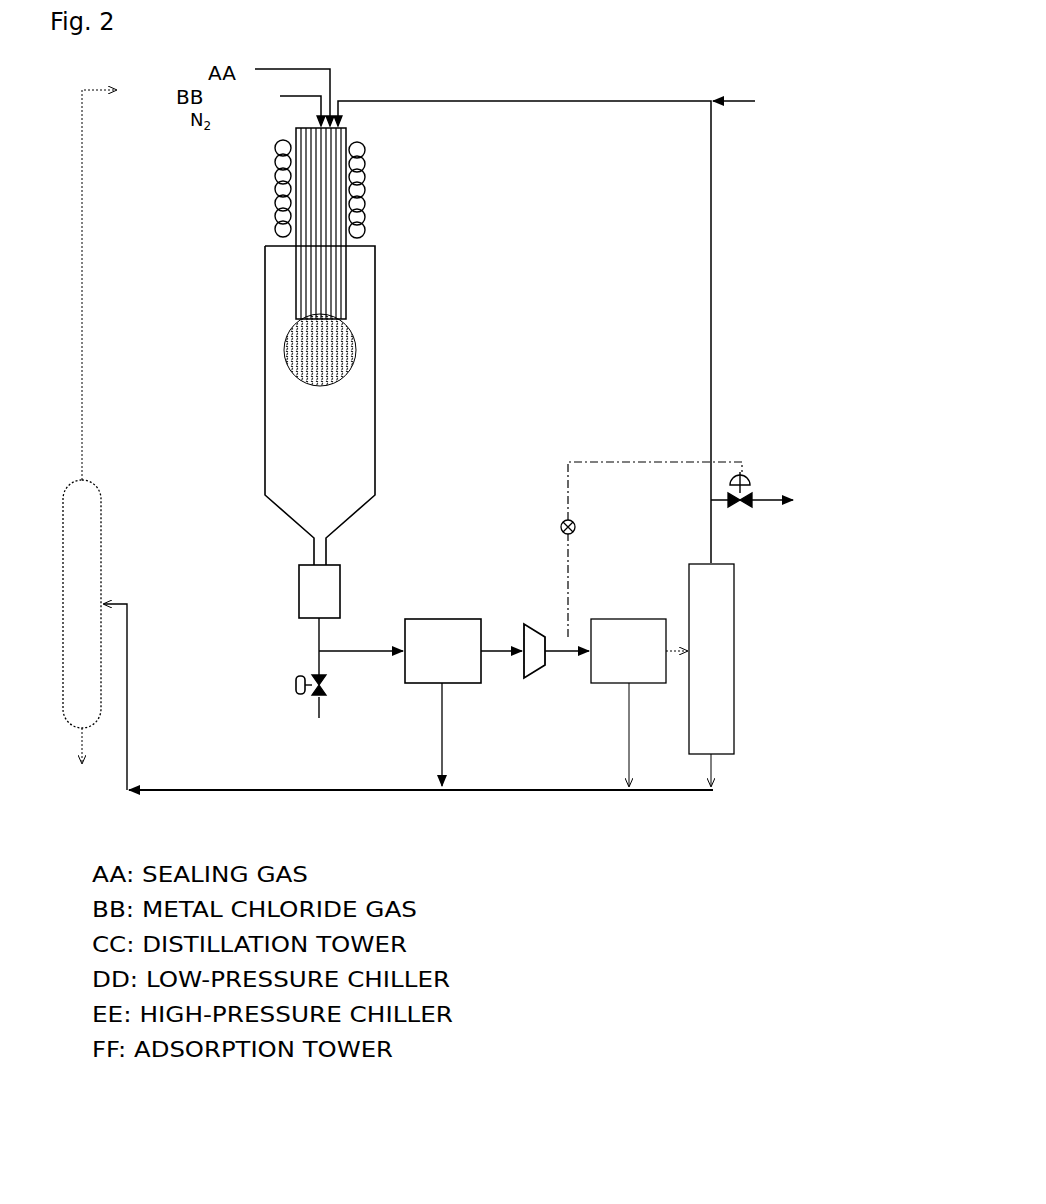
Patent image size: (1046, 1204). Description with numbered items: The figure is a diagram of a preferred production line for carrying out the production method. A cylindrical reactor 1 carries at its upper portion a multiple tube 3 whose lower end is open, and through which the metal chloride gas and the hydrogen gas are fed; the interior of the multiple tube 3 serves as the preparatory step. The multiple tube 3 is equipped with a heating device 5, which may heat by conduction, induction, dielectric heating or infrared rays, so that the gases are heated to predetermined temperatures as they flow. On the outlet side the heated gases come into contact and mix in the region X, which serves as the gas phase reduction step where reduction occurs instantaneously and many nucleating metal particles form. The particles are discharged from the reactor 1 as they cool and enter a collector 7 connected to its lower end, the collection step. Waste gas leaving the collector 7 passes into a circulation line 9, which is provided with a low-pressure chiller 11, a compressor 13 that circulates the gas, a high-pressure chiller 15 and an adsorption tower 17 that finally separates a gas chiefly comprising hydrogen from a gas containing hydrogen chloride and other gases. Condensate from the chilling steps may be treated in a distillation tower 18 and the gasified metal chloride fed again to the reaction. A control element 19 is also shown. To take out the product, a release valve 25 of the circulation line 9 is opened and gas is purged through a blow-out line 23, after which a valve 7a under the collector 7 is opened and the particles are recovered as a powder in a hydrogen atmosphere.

The reactor 1 is at (378, 316).
The multiple tube 3 is at (343, 272).
The heating device 5 is at (357, 207).
The collector 7 is at (341, 585).
The valve 7a is at (297, 689).
The circulation line 9 is at (711, 238).
The low-pressure chiller 11 is at (452, 619).
The compressor 13 is at (524, 672).
The high-pressure chiller 15 is at (592, 677).
The adsorption tower 17 is at (735, 611).
The distillation tower 18 is at (101, 581).
The pressure sensor 19 is at (562, 522).
The blow-out line 23 is at (768, 497).
The release valve 25 is at (745, 472).
The contacting/mixing region X is at (303, 357).